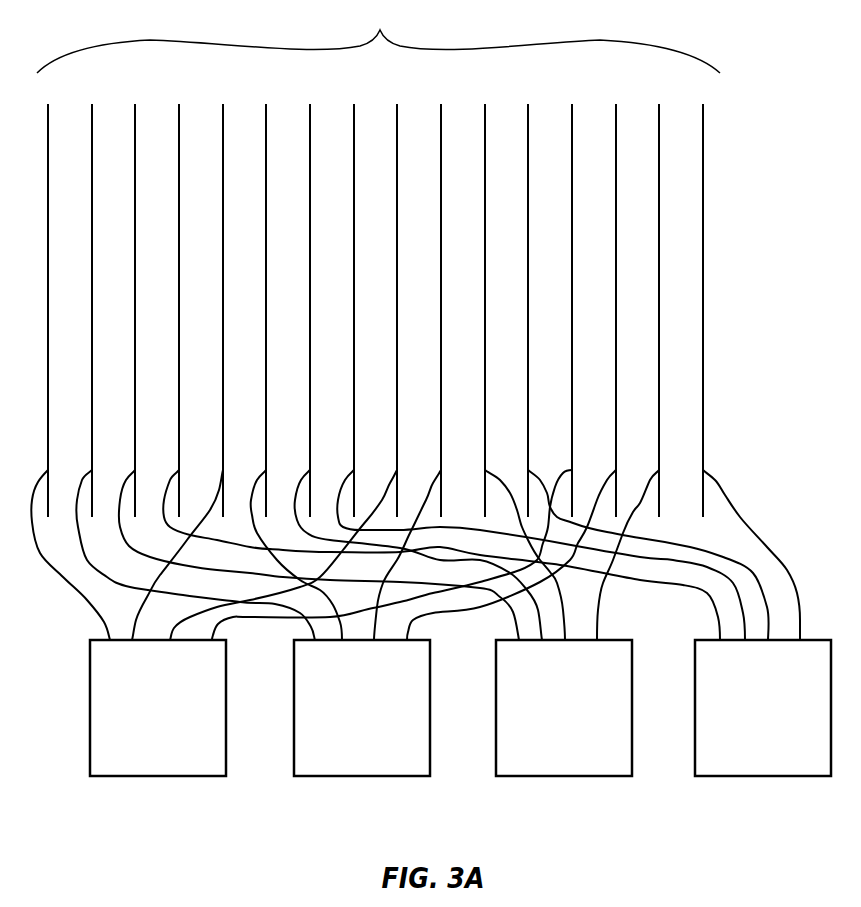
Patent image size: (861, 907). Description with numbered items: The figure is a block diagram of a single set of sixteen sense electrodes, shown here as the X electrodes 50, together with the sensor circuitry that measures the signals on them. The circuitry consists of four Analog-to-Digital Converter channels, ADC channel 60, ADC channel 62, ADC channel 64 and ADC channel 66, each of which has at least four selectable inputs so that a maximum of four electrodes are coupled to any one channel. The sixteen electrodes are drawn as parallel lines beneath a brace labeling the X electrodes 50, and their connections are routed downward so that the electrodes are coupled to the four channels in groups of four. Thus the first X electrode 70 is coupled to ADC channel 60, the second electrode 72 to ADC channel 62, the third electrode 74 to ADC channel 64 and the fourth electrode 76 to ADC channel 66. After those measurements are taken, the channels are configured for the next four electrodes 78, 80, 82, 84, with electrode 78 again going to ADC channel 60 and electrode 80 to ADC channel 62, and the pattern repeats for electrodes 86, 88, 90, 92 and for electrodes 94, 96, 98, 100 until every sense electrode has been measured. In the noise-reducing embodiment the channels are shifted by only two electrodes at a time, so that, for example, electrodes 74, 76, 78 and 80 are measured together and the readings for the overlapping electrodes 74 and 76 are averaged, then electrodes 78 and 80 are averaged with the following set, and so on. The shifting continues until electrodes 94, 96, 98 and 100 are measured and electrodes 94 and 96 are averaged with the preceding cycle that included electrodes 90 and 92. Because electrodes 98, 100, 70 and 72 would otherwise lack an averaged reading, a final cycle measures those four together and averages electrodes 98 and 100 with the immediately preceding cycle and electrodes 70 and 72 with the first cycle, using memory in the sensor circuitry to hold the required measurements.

The X electrodes 50 is at (378, 40).
The ADC channel 60 is at (122, 762).
The ADC channel 62 is at (326, 762).
The ADC channel 64 is at (528, 762).
The ADC channel 66 is at (727, 762).
The first X electrode 70 is at (70, 361).
The second X electrode 72 is at (195, 361).
The third X electrode 74 is at (319, 361).
The fourth X electrode 76 is at (441, 361).
The X electrode 78 is at (183, 361).
The X electrode 80 is at (296, 361).
The X electrode 82 is at (418, 361).
The X electrode 84 is at (541, 361).
The X electrode 86 is at (289, 361).
The X electrode 88 is at (413, 361).
The X electrode 90 is at (519, 361).
The X electrode 92 is at (642, 361).
The X electrode 94 is at (398, 361).
The X electrode 96 is at (517, 361).
The X electrode 98 is at (634, 361).
The X electrode 100 is at (744, 361).